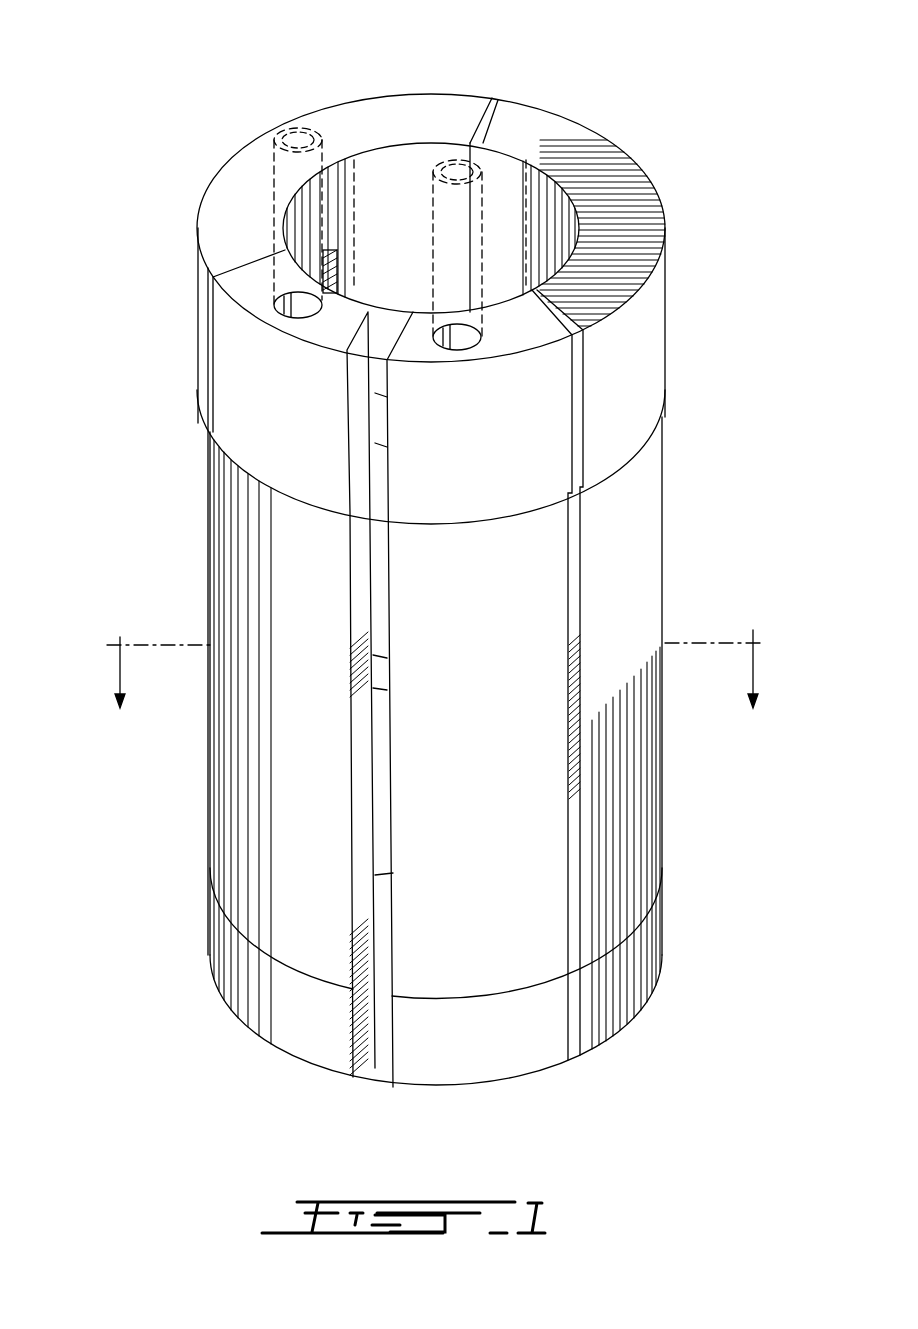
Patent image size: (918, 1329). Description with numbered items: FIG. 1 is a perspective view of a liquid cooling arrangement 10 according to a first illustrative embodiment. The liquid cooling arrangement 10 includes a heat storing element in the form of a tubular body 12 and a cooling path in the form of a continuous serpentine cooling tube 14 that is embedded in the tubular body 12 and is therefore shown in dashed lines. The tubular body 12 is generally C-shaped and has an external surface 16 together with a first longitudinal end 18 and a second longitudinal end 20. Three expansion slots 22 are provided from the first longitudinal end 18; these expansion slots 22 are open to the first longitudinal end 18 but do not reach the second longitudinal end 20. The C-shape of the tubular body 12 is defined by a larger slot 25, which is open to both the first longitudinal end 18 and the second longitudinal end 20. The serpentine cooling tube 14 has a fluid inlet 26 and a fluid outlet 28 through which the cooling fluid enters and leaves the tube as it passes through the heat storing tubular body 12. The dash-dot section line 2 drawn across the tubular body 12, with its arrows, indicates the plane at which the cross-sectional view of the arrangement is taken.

The liquid cooling arrangement 10 is at (141, 117).
The tubular body 12 is at (631, 184).
The serpentine cooling tube 14 is at (282, 173).
The external surface 16 is at (662, 520).
The first longitudinal end 18 is at (637, 242).
The second longitudinal end 20 is at (587, 1055).
The expansion slots 22 is at (500, 96).
The larger slot 25 is at (375, 1058).
The fluid inlet 26 is at (298, 140).
The fluid outlet 28 is at (460, 160).
The section line 2- 2 is at (439, 657).